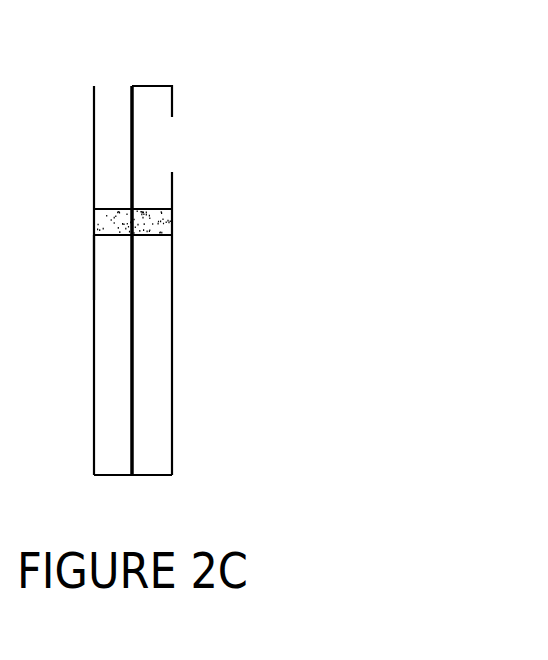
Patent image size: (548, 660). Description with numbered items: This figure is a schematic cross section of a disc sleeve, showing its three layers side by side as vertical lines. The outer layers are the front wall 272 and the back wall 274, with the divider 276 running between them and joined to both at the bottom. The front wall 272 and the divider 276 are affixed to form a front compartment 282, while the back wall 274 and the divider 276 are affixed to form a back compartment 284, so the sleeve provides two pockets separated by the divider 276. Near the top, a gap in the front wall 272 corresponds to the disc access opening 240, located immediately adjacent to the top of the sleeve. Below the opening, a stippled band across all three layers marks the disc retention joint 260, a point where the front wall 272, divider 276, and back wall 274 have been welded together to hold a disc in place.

The disc access opening 240 is at (157, 142).
The disc retention joint 260 is at (160, 224).
The front wall 272 is at (172, 431).
The back wall 274 is at (92, 404).
The divider 276 is at (130, 455).
The front compartment 282 is at (157, 274).
The back compartment 284 is at (108, 247).